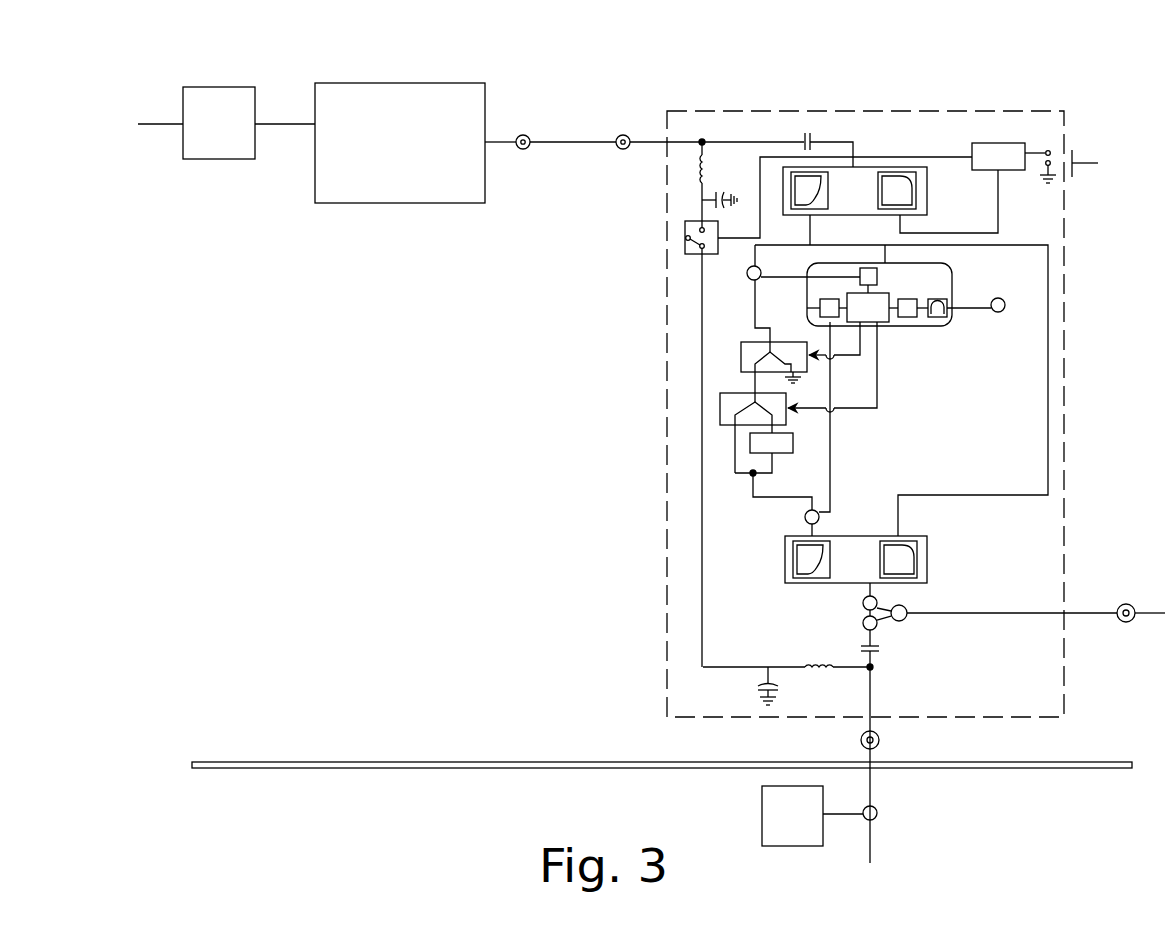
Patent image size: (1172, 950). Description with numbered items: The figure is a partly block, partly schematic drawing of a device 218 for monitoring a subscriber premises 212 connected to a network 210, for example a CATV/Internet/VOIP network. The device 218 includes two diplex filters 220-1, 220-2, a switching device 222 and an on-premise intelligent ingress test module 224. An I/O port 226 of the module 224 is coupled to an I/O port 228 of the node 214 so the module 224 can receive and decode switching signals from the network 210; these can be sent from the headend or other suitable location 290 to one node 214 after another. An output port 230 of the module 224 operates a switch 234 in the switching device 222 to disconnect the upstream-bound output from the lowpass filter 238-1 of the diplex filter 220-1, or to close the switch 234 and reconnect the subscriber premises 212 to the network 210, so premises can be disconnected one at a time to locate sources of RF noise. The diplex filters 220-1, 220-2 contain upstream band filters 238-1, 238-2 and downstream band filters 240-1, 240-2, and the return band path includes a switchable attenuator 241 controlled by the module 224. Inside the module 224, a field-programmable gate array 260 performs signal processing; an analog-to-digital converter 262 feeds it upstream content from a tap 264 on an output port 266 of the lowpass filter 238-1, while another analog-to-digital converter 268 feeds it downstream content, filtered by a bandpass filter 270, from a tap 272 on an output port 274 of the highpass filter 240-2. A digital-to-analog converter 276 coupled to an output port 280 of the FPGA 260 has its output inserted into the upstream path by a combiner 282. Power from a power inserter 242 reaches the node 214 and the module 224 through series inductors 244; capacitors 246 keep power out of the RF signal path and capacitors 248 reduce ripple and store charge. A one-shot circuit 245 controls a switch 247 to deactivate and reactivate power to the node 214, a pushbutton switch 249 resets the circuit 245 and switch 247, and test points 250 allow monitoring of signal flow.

The network 210 is at (281, 94).
The headend or other suitable location 290 is at (218, 160).
The node 214 is at (403, 222).
The I/O port 228 is at (523, 134).
The I/O port 226 is at (623, 134).
The device 218 is at (1027, 105).
The switching device 222 is at (691, 382).
The series inductors 244 is at (696, 162).
The capacitors 248 is at (713, 194).
The switch 247 is at (685, 240).
The capacitors 246 is at (808, 132).
The diplex filter 220-2 is at (1010, 195).
The lowpass filter 238-2 is at (790, 188).
The highpass filter 240-2 is at (917, 200).
The output port 274 is at (902, 215).
The circuit 245 is at (997, 136).
The pushbutton switch 249 is at (1077, 160).
The on-premise intelligent ingress test module 224 is at (965, 287).
The combiner 282 is at (747, 272).
The output port 280 is at (862, 288).
The output port 230 is at (860, 325).
The digital-to-analog converter 276 is at (868, 267).
The analog-to-digital converter 262 is at (820, 306).
The field-programmable gate array 260 is at (887, 326).
The analog-to-digital converter 268 is at (906, 299).
The bandpass filter 270 is at (940, 299).
The tap 272 is at (1002, 312).
The switch 234 is at (748, 342).
The switchable attenuator 241 is at (786, 453).
The tap 264 is at (805, 517).
The output port 266 is at (816, 531).
The diplex filter 220-1 is at (1025, 537).
The lowpass filter 238-1 is at (791, 566).
The downstream band filter 240-1 is at (920, 558).
The test points 250 is at (1127, 604).
The subscriber premises 212 is at (402, 758).
The power inserter 242 is at (762, 815).